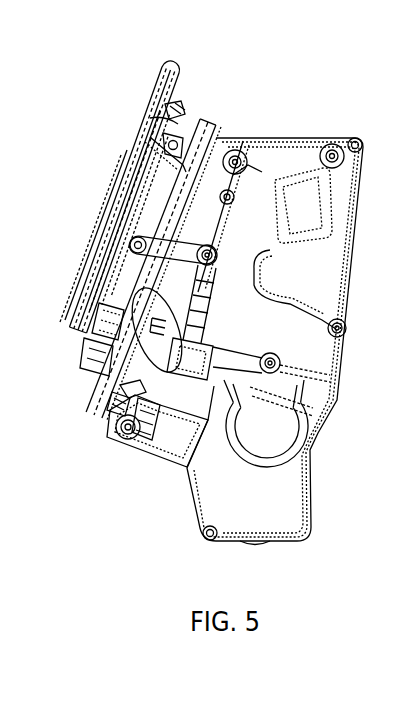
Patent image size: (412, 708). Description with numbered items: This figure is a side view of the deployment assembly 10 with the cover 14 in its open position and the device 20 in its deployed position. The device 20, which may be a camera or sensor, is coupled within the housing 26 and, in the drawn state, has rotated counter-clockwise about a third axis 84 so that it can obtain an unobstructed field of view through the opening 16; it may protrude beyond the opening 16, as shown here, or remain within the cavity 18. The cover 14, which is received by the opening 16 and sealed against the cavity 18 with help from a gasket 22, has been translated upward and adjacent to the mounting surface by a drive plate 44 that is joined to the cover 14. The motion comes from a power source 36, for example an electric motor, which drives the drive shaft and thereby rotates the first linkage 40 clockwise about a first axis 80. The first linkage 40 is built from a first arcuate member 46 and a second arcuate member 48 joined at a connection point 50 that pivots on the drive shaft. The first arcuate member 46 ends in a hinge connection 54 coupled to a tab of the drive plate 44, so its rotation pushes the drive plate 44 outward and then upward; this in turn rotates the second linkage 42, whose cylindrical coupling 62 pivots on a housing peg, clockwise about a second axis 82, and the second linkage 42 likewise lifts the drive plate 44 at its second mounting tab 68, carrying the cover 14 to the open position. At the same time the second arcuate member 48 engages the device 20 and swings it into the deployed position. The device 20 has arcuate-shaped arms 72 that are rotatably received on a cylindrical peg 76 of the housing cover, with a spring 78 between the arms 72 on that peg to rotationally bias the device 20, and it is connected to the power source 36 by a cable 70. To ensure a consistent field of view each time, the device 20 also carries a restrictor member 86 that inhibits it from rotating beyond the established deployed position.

The deployment assembly 10 is at (281, 52).
The cover 14 is at (125, 148).
The opening 16 is at (90, 389).
The cavity 18 is at (290, 289).
The device 20 is at (84, 363).
The gasket 22 is at (207, 121).
The housing 26 is at (300, 138).
The power source 36 is at (322, 213).
The first linkage 40 is at (222, 239).
The second linkage 42 is at (183, 163).
The drive plate 44 is at (173, 115).
The first arcuate member 46 is at (150, 228).
The second arcuate member 48 is at (200, 315).
The connection point 50 is at (250, 252).
The hinge connection 54 is at (137, 247).
The cylindrical coupling 62 is at (257, 166).
The second mounting tab 68 is at (172, 118).
The cable 70 is at (291, 464).
The arcuate-shaped arms 72 is at (158, 408).
The cylindrical peg 76 is at (118, 424).
The spring 78 is at (135, 428).
The first axis 80 is at (250, 252).
The second axis 82 is at (236, 155).
The third axis 84 is at (128, 428).
The restrictor member 86 is at (118, 401).